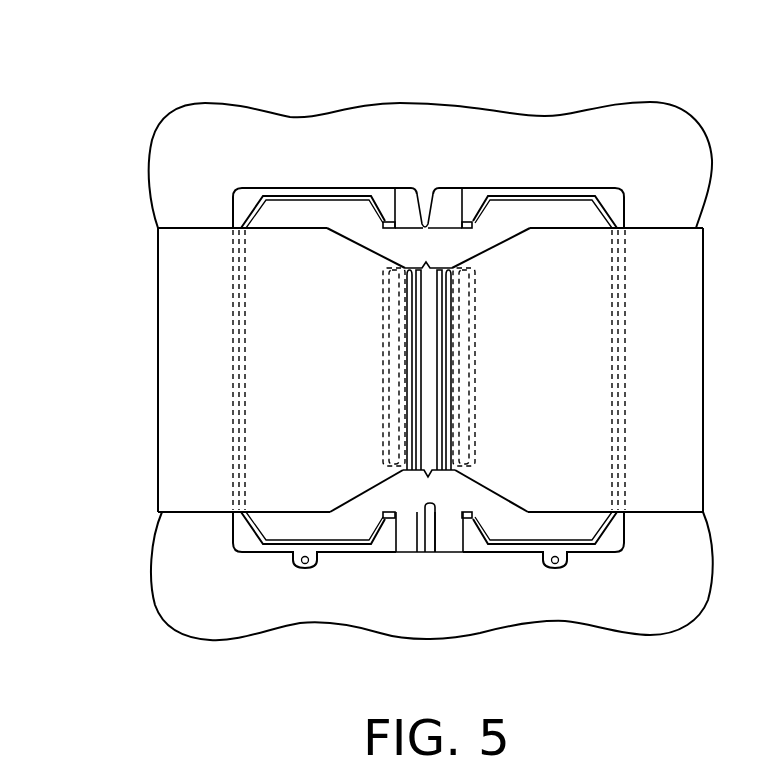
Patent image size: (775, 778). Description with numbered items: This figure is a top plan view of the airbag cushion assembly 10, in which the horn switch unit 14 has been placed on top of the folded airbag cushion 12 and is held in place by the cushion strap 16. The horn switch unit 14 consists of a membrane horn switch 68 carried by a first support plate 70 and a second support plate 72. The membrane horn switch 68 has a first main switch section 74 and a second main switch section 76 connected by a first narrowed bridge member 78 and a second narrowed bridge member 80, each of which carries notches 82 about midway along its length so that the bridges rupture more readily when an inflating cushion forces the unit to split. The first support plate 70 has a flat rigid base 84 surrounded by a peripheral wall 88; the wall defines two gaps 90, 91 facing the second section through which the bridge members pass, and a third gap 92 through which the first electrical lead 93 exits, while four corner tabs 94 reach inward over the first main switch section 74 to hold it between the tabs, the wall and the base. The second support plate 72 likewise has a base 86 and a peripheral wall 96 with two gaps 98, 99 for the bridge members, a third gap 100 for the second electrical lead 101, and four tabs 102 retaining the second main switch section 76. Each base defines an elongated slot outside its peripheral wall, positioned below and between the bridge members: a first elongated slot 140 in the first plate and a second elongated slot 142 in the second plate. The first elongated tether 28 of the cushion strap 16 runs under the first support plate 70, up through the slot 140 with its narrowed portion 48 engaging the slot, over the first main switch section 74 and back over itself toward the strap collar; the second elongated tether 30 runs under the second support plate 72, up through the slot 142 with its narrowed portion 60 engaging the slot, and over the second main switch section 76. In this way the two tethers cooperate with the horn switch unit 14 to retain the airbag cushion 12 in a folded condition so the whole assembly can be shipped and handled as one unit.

The airbag cushion assembly 10 is at (443, 76).
The airbag cushion 12 is at (555, 118).
The horn switch unit 14 is at (530, 173).
The cushion strap 16 is at (713, 250).
The first elongated tether 28 is at (170, 332).
The second elongated tether 30 is at (704, 328).
The narrowed portion 48 is at (340, 242).
The narrowed portion 60 is at (499, 247).
The membrane horn switch 68 is at (337, 222).
The first support plate 70 is at (258, 188).
The second support plate 72 is at (603, 183).
The first main switch section 74 is at (347, 533).
The second main switch section 76 is at (527, 530).
The first narrowed bridge member 78 is at (419, 226).
The second narrowed bridge member 80 is at (416, 514).
The notches 82 is at (430, 226).
The base 84 is at (406, 227).
The base 86 is at (453, 190).
The peripheral wall 88 is at (385, 373).
The gap 90 is at (388, 232).
The gap 91 is at (393, 507).
The third gap 92 is at (294, 562).
The first electrical lead 93 is at (307, 568).
The tabs 94 is at (238, 212).
The peripheral wall 96 is at (472, 356).
The gap 98 is at (429, 230).
The gap 99 is at (462, 507).
The third gap 100 is at (578, 548).
The second electrical lead 101 is at (554, 568).
The tabs 102 is at (618, 208).
The elongated slot 140 is at (412, 314).
The elongated slot 142 is at (447, 406).